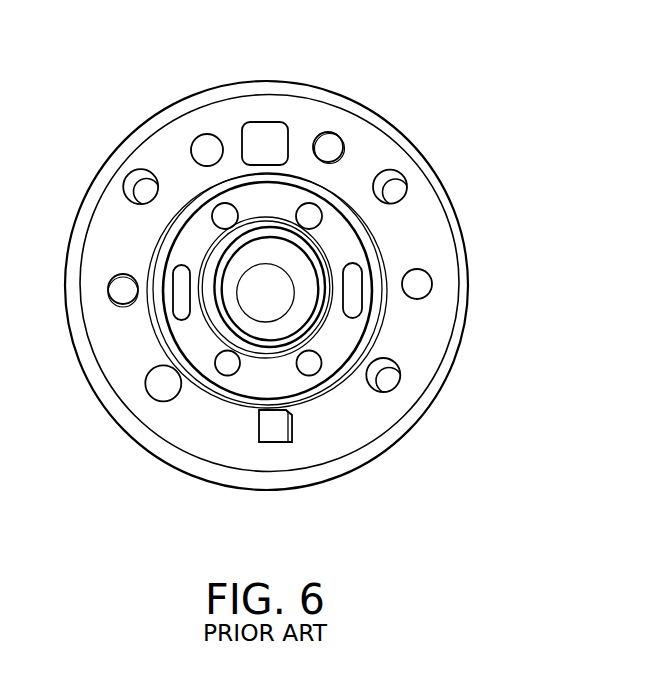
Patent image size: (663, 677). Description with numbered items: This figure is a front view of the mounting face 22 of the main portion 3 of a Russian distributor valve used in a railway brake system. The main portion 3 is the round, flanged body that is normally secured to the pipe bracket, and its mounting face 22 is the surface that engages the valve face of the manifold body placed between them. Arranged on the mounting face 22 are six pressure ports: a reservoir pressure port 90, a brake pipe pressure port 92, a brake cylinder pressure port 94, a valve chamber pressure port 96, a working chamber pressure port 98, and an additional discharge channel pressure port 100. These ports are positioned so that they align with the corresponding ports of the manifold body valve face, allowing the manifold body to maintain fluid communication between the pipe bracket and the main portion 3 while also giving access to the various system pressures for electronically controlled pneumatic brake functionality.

The main portion 3 is at (430, 222).
The mounting face 22 is at (435, 233).
The reservoir pressure port 90 is at (331, 143).
The brake pipe pressure port 92 is at (197, 148).
The brake cylinder pressure port 94 is at (270, 128).
The valve chamber pressure port 96 is at (118, 289).
The working chamber pressure port 98 is at (272, 428).
The additional discharge channel pressure port 100 is at (423, 285).